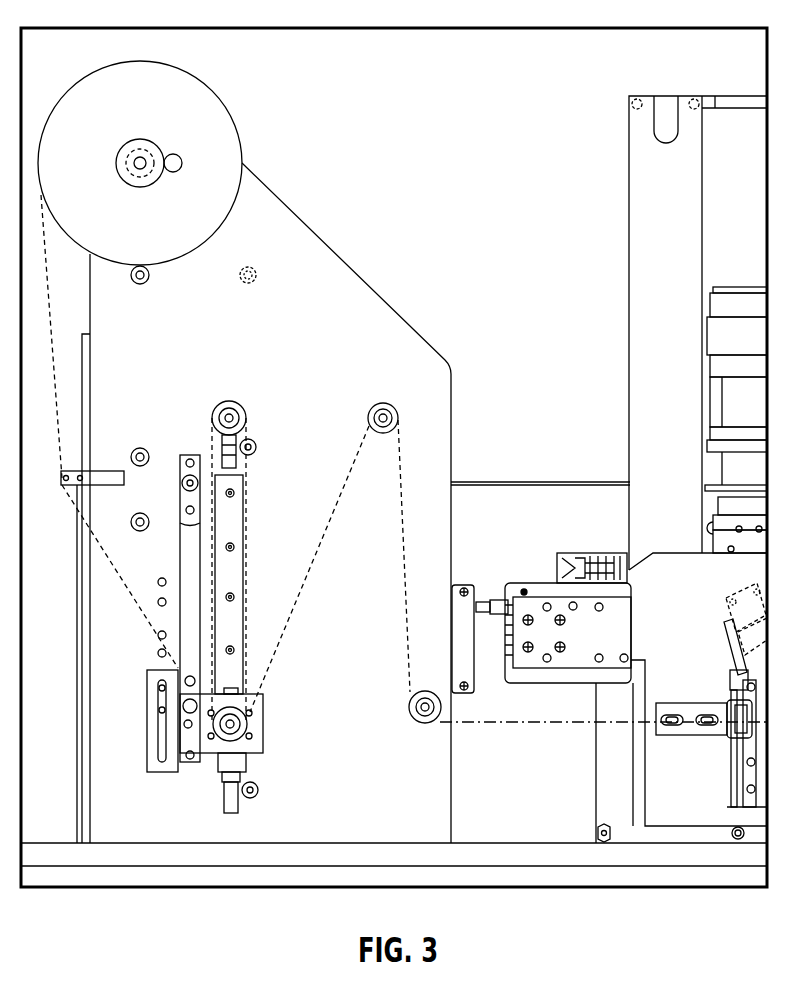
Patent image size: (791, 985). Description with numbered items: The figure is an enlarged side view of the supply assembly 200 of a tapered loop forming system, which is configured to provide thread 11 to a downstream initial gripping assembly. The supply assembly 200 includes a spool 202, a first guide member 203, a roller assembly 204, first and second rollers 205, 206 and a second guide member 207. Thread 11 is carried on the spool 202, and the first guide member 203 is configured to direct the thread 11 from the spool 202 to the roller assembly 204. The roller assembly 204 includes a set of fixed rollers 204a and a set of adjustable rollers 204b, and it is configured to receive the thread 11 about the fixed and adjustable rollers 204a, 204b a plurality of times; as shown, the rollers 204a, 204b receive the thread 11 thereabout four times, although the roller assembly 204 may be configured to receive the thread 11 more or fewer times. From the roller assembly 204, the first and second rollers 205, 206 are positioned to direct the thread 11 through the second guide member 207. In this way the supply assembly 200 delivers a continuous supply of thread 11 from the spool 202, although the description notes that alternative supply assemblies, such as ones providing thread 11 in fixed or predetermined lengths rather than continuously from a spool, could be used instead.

The thread 11 is at (51, 323).
The supply assembly 200 is at (358, 231).
The spool 202 is at (231, 111).
The first guide member 203 is at (67, 470).
The roller assembly 204 is at (236, 399).
The set of fixed rollers 204a is at (246, 416).
The set of adjustable rollers 204b is at (252, 724).
The first roller 205 is at (383, 402).
The second roller 206 is at (425, 723).
The second guide member 207 is at (727, 737).